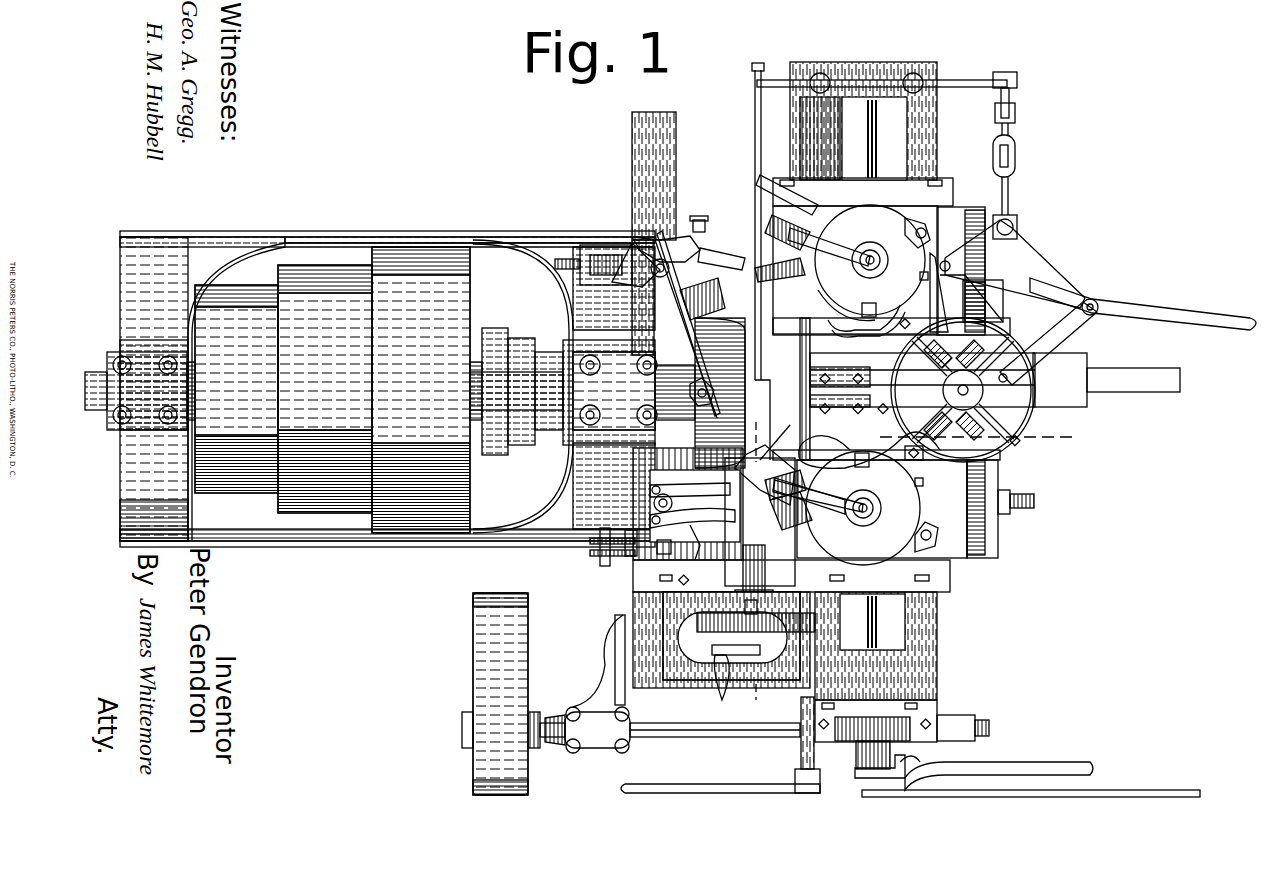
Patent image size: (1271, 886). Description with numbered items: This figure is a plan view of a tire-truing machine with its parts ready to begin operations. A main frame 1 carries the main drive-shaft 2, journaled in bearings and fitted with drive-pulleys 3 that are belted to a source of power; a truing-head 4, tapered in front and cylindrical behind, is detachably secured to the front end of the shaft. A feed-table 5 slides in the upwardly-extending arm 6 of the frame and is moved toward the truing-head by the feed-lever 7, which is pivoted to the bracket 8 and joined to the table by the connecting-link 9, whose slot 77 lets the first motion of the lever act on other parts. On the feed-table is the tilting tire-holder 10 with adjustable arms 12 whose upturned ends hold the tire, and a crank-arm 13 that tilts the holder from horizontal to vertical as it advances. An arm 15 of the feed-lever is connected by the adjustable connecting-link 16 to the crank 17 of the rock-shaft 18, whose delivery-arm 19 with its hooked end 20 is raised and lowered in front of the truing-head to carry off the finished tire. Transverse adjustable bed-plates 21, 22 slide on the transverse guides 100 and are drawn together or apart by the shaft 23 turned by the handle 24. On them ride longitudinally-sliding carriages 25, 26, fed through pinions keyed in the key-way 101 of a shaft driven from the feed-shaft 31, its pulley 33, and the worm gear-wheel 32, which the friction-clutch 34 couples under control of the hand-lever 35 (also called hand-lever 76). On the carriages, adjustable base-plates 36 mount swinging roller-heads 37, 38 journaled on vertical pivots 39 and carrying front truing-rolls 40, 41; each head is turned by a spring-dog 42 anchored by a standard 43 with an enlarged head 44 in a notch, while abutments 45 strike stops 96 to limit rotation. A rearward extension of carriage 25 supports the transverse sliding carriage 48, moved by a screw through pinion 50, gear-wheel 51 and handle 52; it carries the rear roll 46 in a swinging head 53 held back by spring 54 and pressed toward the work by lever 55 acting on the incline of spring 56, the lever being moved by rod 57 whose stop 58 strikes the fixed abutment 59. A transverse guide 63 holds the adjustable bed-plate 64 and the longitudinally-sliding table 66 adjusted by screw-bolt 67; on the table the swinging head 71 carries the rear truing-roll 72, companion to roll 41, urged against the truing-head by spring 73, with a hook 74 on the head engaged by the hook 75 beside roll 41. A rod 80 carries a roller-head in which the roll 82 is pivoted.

The main frame 1 is at (387, 403).
The main drive-shaft 2 is at (470, 412).
The drive-pulleys 3 is at (432, 247).
The truing-head 4 is at (700, 425).
The feed-table 5 is at (1135, 385).
The upwardly-extending arm 6 is at (1084, 402).
The feed-lever 7 is at (1198, 308).
The bracket 8 is at (945, 292).
The connecting-link 9 is at (1065, 328).
The tilting tire-holder 10 is at (1020, 410).
The adjustable arms 12 is at (1017, 446).
The crank-arm 13 is at (960, 420).
The arm of the lever 15 is at (1010, 238).
The adjustable connecting-link 16 is at (1016, 160).
The crank 17 is at (1012, 100).
The rock-shaft 18 is at (960, 80).
The delivery-arm 19 is at (757, 141).
The hooked end 20 is at (815, 518).
The transverse adjustable bed-plate 21 is at (945, 580).
The transverse adjustable bed-plate 22 is at (950, 190).
The shaft 23 is at (805, 150).
The handle 24 is at (655, 785).
The longitudinally-sliding carriage 25 is at (998, 540).
The longitudinally-sliding carriage 26 is at (1005, 306).
The feed-shaft 31 is at (690, 735).
The worm gear-wheel 32 is at (850, 745).
The pulley 33 is at (490, 676).
The friction-clutch 34 is at (865, 765).
The hand-lever 35 is at (1060, 765).
The adjustable base-plates 36 is at (961, 381).
The swinging roller-head 37 is at (882, 508).
The swinging roller-head 38 is at (910, 262).
The vertical pivots 39 is at (870, 505).
The front truing-roll 40 is at (820, 480).
The front truing-roll 41 is at (760, 283).
The spring-dog 42 is at (865, 310).
The standard 43 is at (918, 458).
The enlarged head 44 is at (878, 306).
The abutments 45 is at (918, 276).
The rear roll 46 is at (777, 430).
The transverse sliding carriage 48 is at (760, 522).
The pinion 50 is at (745, 630).
The gear-wheel 51 is at (706, 630).
The handle 52 is at (715, 690).
The swinging head 53 is at (760, 500).
The spring 54 is at (650, 490).
The lever 55 is at (742, 560).
The spring 56 is at (689, 550).
The rod 57 is at (600, 545).
The stop 58 is at (670, 552).
The fixed abutment 59 is at (608, 566).
The transverse guide 63 is at (640, 157).
The adjustable bed-plate 64 is at (600, 245).
The longitudinally-sliding table 66 is at (622, 283).
The screw-bolt 67 is at (570, 272).
The swinging head 71 is at (638, 240).
The rear truing-roll 72 is at (718, 300).
The spring 73 is at (680, 232).
The hook 74 is at (740, 256).
The hook 75 is at (765, 195).
The hand-lever 76 is at (1150, 790).
The slot 77 is at (1090, 300).
The rod 80 is at (698, 325).
The roll 82 is at (712, 390).
The stops 96 is at (908, 224).
The transverse guides 100 is at (935, 137).
The key-way 101 is at (880, 140).